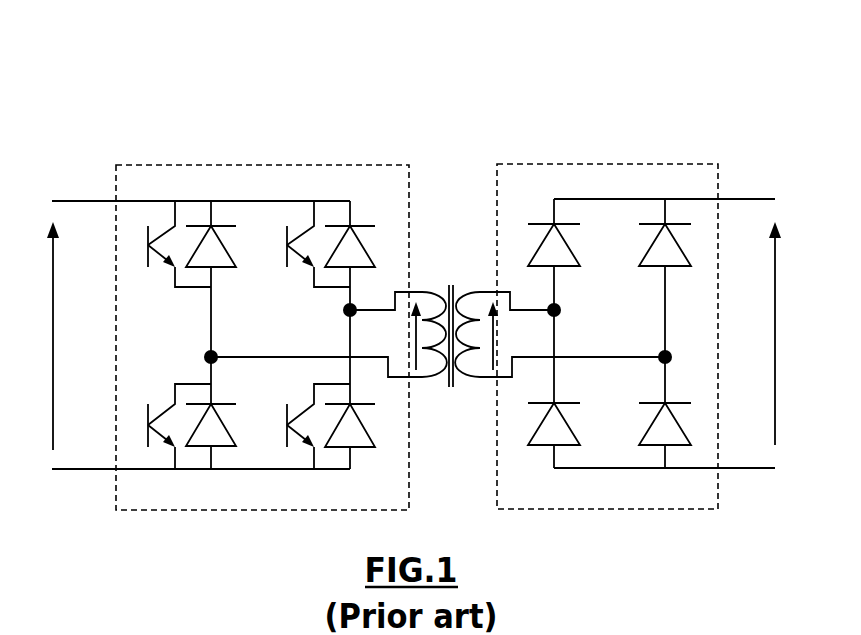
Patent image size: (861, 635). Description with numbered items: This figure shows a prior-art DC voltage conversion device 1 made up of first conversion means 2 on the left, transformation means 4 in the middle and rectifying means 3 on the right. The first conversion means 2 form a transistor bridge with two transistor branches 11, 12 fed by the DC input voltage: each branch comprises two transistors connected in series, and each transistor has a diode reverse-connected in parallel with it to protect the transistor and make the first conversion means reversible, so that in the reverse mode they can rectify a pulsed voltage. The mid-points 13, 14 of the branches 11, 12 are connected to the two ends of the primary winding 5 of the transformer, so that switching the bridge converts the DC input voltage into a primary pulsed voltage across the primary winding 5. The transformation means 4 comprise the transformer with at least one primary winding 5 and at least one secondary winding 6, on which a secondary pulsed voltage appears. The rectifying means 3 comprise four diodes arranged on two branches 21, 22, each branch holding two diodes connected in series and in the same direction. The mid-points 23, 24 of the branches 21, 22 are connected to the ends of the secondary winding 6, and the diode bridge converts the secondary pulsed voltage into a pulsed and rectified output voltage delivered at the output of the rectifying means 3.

The conversion device 1 is at (458, 106).
The first conversion means 2 is at (222, 510).
The rectifying means 3 is at (649, 509).
The transformation means 4 is at (436, 403).
The primary winding 5 is at (440, 292).
The secondary winding 6 is at (479, 292).
The transistor branch 11 is at (210, 176).
The transistor branch 12 is at (349, 176).
The mid-point 13 is at (205, 357).
The mid-point 14 is at (343, 310).
The branch 21 is at (561, 168).
The branch 22 is at (662, 170).
The mid-point 23 is at (559, 313).
The mid-point 24 is at (670, 354).